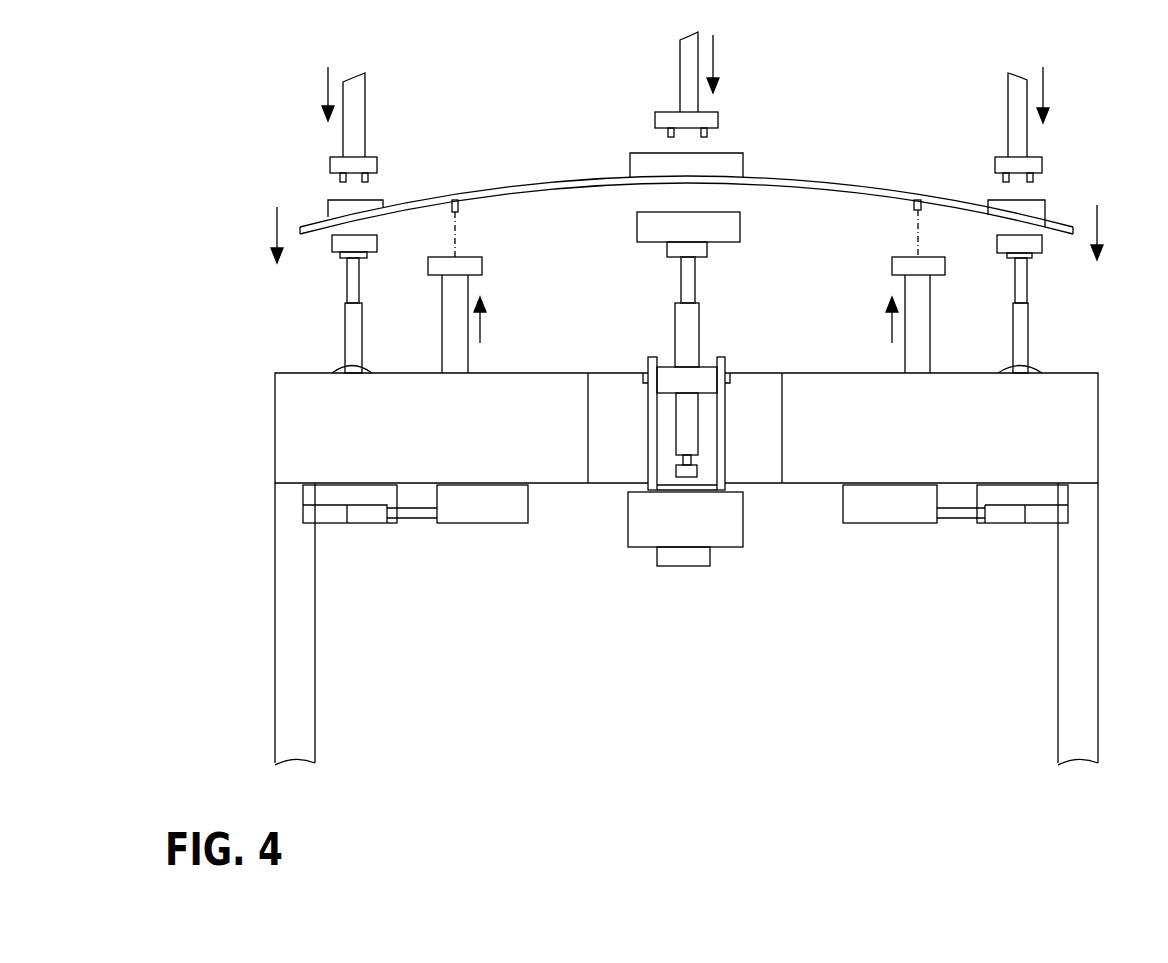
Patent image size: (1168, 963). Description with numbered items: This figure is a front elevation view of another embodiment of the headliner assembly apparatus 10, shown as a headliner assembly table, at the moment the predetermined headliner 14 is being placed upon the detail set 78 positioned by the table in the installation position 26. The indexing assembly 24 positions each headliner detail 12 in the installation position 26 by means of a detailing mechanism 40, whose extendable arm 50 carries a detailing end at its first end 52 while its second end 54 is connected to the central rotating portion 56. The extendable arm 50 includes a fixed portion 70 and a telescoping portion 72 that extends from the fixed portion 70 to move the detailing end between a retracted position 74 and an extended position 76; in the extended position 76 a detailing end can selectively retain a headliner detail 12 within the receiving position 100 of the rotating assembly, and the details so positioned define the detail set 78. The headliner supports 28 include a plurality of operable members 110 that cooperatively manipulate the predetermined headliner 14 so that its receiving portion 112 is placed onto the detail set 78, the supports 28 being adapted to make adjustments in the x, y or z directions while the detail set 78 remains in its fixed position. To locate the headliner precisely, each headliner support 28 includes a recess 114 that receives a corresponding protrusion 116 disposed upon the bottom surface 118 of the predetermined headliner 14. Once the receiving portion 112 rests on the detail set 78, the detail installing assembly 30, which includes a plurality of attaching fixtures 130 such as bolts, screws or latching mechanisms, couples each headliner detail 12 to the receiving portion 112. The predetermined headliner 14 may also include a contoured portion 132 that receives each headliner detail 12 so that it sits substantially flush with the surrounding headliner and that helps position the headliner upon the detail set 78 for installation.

The headliner assembly apparatus 10 is at (250, 113).
The headliner detail 12 is at (330, 245).
The predetermined headliner 14 is at (555, 185).
The indexing assembly 24 is at (1072, 325).
The installation position 26 is at (1050, 242).
The headliner support 28 is at (686, 546).
The detail installing assembly 30 is at (668, 100).
The detailing mechanism 40 is at (340, 370).
The extendable arm 50 is at (1042, 299).
The first end 52 is at (688, 475).
The second end 54 is at (685, 393).
The central rotating portion 56 is at (700, 375).
The fixed portion 70 is at (1020, 350).
The telescoping portion 72 is at (1018, 272).
The retracted position 74 is at (670, 452).
The extended position 76 is at (705, 310).
The detail set 78 is at (748, 225).
The receiving position 100 is at (708, 430).
The operable member 110 is at (920, 298).
The receiving portion 112 is at (390, 197).
The recess 114 is at (482, 262).
The protrusion 116 is at (460, 207).
The bottom surface 118 is at (600, 190).
The attaching fixture 130 is at (708, 133).
The contoured portion 132 is at (650, 160).